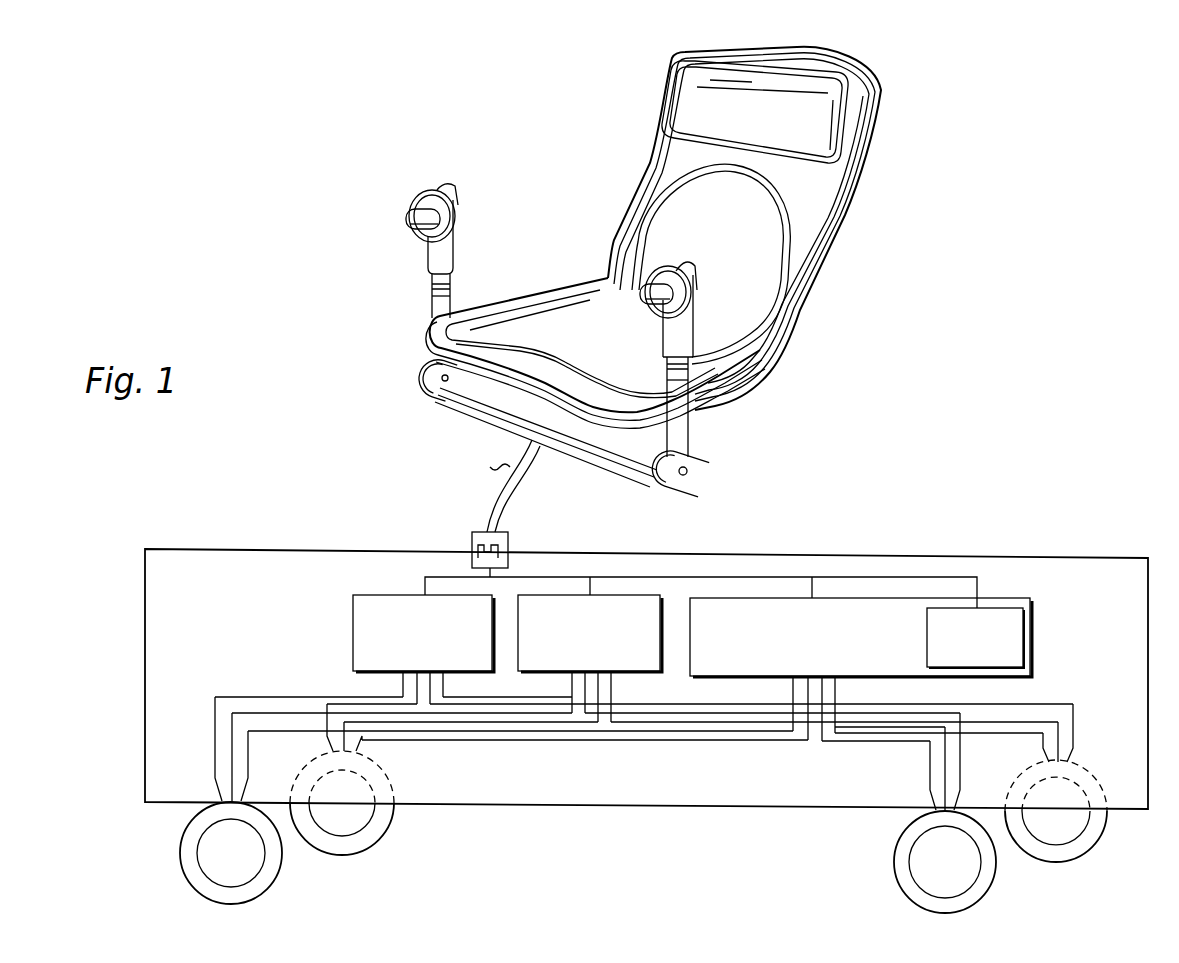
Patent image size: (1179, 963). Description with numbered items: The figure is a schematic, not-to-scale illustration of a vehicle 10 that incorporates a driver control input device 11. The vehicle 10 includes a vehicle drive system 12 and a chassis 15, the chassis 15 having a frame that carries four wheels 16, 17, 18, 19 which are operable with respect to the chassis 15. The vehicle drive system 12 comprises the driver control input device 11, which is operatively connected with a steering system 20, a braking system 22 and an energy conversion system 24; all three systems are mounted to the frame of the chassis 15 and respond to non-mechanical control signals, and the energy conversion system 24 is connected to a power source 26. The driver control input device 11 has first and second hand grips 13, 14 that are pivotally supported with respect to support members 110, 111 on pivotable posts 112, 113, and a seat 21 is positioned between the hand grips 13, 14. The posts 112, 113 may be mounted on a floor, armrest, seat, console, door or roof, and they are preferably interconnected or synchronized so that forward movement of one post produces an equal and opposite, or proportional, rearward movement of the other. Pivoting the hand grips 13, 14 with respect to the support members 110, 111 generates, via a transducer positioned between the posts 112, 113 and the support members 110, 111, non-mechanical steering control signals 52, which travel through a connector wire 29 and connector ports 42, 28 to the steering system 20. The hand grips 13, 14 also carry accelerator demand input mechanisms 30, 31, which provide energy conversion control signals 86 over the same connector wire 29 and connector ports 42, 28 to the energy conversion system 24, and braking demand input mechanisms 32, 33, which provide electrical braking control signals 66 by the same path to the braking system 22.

The vehicle 10 is at (985, 238).
The driver control input device 11 is at (541, 158).
The vehicle drive system 12 is at (826, 449).
The first hand grip 13 is at (456, 253).
The second hand grip 14 is at (696, 345).
The chassis 15 is at (1025, 558).
The wheel 16 is at (182, 848).
The wheel 17 is at (368, 845).
The wheel 18 is at (888, 852).
The wheel 19 is at (1083, 853).
The steering system 20 is at (375, 595).
The seat 21 is at (661, 87).
The braking system 22 is at (632, 595).
The energy conversion system 24 is at (768, 598).
The power source 26 is at (943, 608).
The connector port 28 is at (472, 556).
The connector wire 29 is at (526, 455).
The accelerator demand input mechanism 30 is at (447, 190).
The accelerator demand input mechanism 31 is at (773, 229).
The braking demand input mechanism 32 is at (410, 212).
The braking demand input mechanism 33 is at (549, 303).
The connector port 42 is at (482, 533).
The steering control signals 52 is at (546, 454).
The braking control signals 66 is at (546, 454).
The energy conversion control signals 86 is at (548, 444).
The support member 110 is at (430, 396).
The support member 111 is at (693, 488).
The pivotable post 112 is at (428, 252).
The pivotable post 113 is at (688, 430).